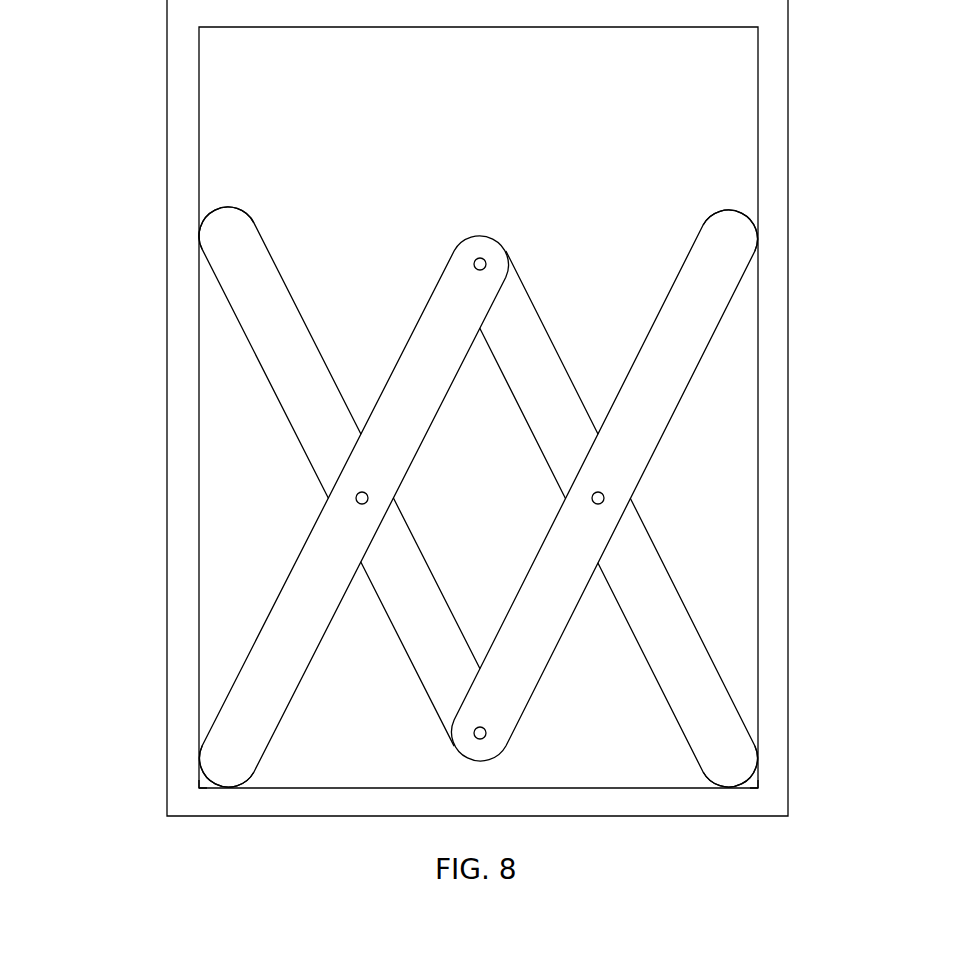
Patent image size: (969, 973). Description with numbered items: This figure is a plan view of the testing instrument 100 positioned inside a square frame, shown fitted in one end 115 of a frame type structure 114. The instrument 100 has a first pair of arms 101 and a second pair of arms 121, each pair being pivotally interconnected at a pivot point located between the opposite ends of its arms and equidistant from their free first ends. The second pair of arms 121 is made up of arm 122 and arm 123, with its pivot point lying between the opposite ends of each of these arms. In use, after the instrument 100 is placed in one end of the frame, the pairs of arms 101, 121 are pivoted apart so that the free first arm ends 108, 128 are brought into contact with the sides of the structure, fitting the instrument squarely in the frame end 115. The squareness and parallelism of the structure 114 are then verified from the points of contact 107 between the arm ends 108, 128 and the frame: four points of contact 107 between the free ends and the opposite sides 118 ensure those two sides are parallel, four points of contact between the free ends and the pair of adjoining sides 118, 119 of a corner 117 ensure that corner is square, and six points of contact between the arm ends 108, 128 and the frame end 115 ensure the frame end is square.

The testing instrument 100 is at (508, 198).
The first pair of arms 101 is at (349, 273).
The second pair of arms 121 is at (637, 271).
The points of contact 107 is at (198, 237).
The first arm ends 108 is at (250, 246).
The first arm ends 128 is at (746, 249).
The frame type structure 114 is at (143, 120).
The frame end 115 is at (396, 755).
The corner 117 is at (197, 788).
The opposite sides 118 is at (198, 382).
The adjoining side 119 is at (608, 788).
The arm 122 is at (285, 418).
The arm 123 is at (290, 568).